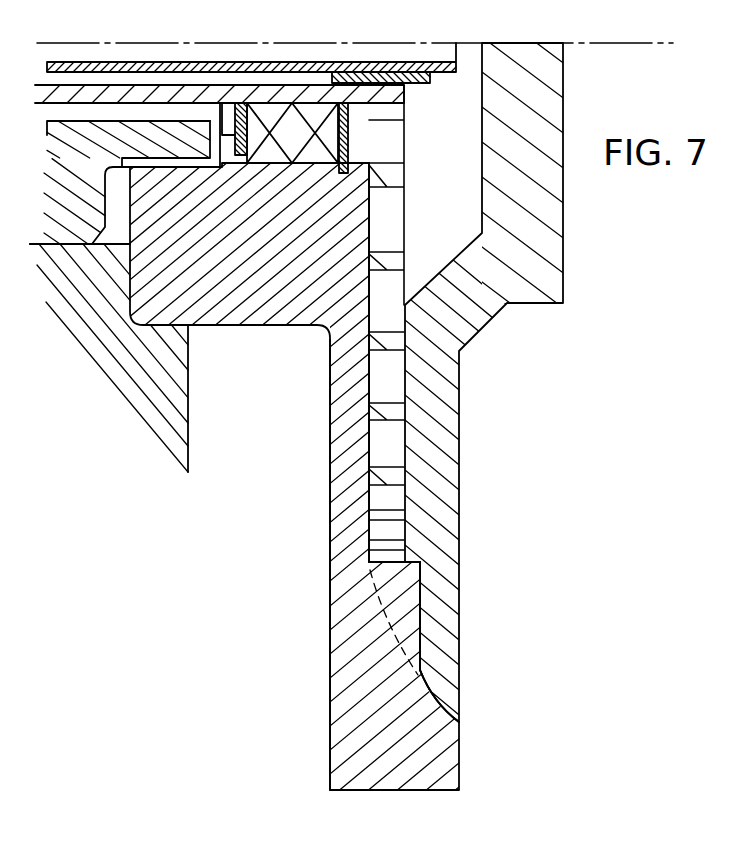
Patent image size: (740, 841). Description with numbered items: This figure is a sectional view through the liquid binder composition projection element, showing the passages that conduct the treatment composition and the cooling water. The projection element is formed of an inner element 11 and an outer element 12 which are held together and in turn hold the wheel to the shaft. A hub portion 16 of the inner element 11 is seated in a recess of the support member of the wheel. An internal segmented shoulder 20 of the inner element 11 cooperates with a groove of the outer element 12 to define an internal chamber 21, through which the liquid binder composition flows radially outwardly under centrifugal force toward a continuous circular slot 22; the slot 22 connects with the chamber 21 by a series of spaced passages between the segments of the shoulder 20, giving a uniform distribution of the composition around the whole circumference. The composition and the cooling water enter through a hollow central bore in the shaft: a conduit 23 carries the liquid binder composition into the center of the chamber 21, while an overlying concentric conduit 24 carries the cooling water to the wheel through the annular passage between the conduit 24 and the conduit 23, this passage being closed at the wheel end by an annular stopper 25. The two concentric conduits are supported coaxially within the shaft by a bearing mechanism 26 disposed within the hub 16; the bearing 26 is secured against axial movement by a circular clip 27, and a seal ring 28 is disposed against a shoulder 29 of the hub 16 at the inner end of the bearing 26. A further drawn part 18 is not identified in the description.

The inner element 11 is at (344, 527).
The outer element 12 is at (447, 520).
The hub portion 16 is at (261, 297).
The mounting block 18 is at (177, 132).
The internal segmented shoulder 20 is at (409, 622).
The internal chamber 21 is at (390, 397).
The continuous circular slot 22 is at (446, 698).
The conduit 23 is at (427, 65).
The concentric conduit 24 is at (300, 97).
The annular stopper 25 is at (363, 72).
The bearing mechanism 26 is at (327, 133).
The circular clip 27 is at (349, 148).
The seal ring 28 is at (240, 113).
The shoulder 29 is at (218, 133).